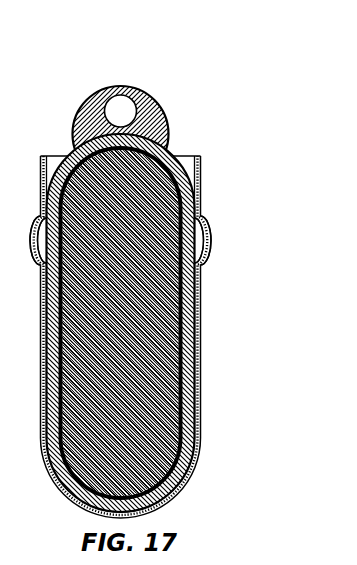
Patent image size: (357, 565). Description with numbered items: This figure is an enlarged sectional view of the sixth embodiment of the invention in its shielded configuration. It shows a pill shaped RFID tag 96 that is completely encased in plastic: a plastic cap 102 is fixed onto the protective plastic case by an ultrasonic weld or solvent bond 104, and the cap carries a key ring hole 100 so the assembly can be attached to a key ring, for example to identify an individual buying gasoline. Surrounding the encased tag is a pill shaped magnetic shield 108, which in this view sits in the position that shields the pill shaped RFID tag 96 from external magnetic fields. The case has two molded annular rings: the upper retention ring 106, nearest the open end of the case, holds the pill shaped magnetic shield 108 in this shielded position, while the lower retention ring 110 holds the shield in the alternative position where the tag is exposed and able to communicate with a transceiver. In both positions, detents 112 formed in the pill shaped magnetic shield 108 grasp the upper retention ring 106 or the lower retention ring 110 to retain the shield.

The pill shaped RFID tag 96 is at (152, 352).
The key ring hole 100 is at (120, 80).
The plastic cap 102 is at (157, 110).
The ultrasonic weld or solvent bond 104 is at (190, 190).
The upper retention ring 106 is at (197, 220).
The pill shaped magnetic shield 108 is at (190, 323).
The lower retention ring 110 is at (192, 407).
The detents 112 is at (198, 245).